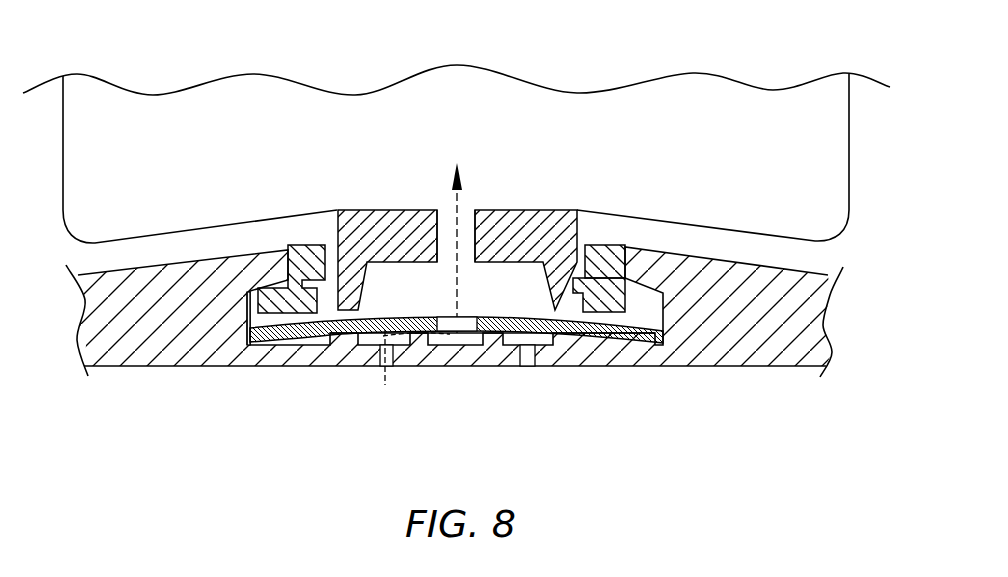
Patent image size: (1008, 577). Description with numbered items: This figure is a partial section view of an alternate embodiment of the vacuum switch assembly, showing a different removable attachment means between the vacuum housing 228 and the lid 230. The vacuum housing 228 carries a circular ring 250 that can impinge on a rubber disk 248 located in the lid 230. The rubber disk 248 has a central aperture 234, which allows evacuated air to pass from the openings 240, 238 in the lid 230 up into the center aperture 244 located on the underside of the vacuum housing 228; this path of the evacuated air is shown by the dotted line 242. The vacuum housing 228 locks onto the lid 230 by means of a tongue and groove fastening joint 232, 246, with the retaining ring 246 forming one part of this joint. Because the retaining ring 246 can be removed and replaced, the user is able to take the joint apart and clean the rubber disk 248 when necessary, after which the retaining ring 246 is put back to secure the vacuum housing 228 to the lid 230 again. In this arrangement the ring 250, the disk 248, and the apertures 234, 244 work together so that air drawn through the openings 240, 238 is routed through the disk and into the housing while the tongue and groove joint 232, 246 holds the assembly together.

The vacuum housing 228 is at (838, 143).
The lid 230 is at (817, 320).
The tongue and groove fastening joint 232 is at (313, 282).
The central aperture 234 is at (468, 331).
The opening 238 is at (537, 357).
The opening 240 is at (390, 352).
The dotted line 242 is at (460, 300).
The center aperture 244 is at (473, 213).
The retaining ring 246 is at (300, 252).
The rubber disk 248 is at (330, 333).
The circular ring 250 is at (563, 303).